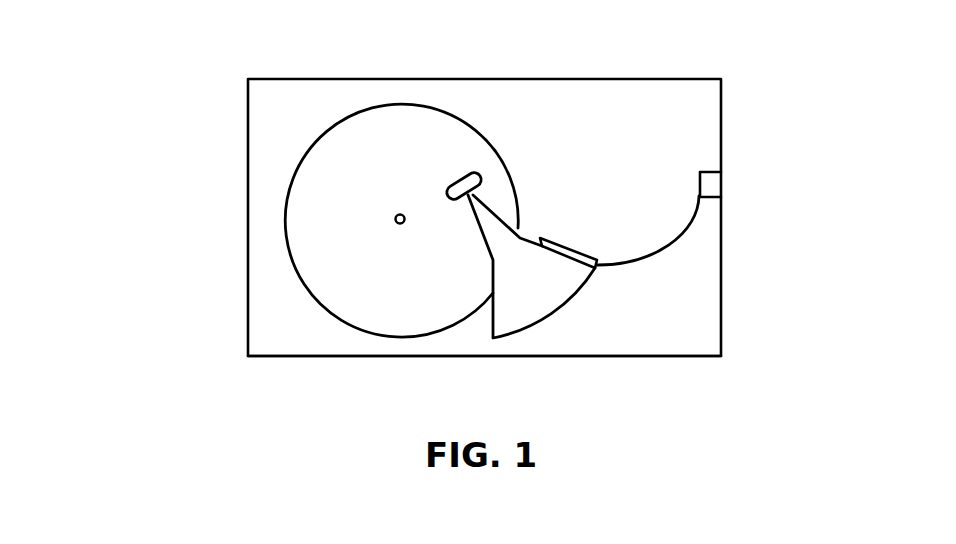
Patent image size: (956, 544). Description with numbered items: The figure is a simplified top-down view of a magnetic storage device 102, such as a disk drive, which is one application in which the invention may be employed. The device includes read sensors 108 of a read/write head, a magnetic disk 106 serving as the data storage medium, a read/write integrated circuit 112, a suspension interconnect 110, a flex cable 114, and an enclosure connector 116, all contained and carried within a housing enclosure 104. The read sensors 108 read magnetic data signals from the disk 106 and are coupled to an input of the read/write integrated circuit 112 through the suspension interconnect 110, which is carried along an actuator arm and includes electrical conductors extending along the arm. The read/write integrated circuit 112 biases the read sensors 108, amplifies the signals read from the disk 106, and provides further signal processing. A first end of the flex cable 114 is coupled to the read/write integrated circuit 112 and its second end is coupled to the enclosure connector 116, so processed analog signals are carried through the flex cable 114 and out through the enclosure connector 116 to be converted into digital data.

The magnetic storage device 102 is at (204, 350).
The housing enclosure 104 is at (610, 357).
The magnetic disk 106 is at (388, 163).
The read sensors 108 is at (454, 153).
The suspension interconnect 110 is at (520, 211).
The read/write integrated circuit 112 is at (585, 220).
The flex cable 114 is at (674, 275).
The enclosure connector 116 is at (748, 178).